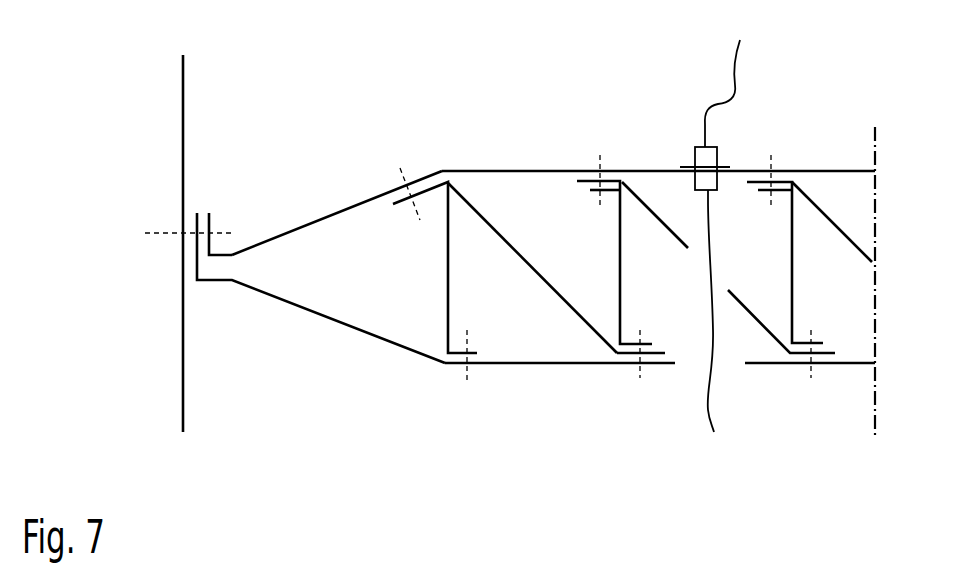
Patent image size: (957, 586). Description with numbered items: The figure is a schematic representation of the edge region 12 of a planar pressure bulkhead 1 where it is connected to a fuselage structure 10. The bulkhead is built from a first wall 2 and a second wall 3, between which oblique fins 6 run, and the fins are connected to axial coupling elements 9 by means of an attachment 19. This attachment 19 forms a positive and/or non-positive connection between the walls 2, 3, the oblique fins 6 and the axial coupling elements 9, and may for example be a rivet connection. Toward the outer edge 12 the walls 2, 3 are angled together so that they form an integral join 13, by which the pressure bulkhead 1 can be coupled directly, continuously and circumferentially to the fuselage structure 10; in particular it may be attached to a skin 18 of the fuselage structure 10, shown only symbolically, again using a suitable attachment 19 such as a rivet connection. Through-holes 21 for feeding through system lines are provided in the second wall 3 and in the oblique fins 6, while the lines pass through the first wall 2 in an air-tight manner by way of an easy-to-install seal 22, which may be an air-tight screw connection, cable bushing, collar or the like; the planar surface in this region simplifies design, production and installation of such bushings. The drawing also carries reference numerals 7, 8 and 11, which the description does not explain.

The pressure bulkhead 1 is at (846, 88).
The first wall 2 is at (490, 170).
The second wall 3 is at (490, 365).
The oblique fins 6 is at (540, 283).
The clutch 7 is at (783, 177).
The shaft 8 is at (825, 360).
The axial coupling elements 9 is at (632, 291).
The fuselage structure 10 is at (135, 243).
The brake 11 is at (620, 283).
The edge region 12 is at (228, 176).
The integral join 13 is at (200, 245).
The skin 18 is at (183, 365).
The attachment 19 is at (465, 372).
The through-holes 21 is at (693, 262).
The seal 22 is at (700, 147).